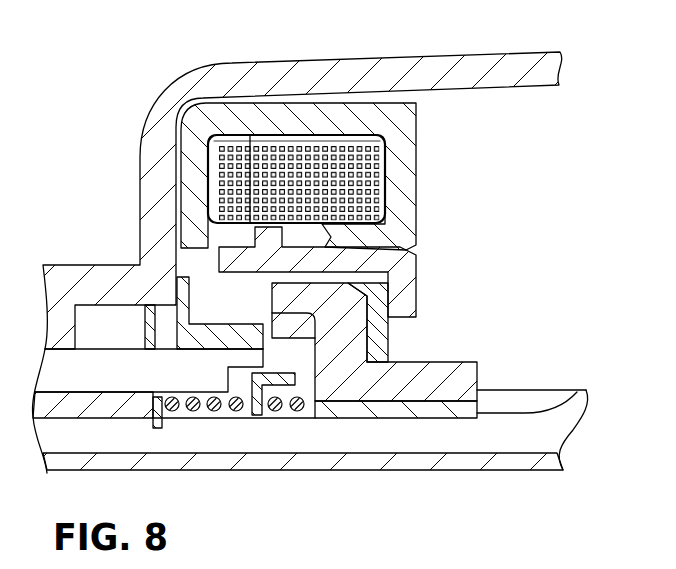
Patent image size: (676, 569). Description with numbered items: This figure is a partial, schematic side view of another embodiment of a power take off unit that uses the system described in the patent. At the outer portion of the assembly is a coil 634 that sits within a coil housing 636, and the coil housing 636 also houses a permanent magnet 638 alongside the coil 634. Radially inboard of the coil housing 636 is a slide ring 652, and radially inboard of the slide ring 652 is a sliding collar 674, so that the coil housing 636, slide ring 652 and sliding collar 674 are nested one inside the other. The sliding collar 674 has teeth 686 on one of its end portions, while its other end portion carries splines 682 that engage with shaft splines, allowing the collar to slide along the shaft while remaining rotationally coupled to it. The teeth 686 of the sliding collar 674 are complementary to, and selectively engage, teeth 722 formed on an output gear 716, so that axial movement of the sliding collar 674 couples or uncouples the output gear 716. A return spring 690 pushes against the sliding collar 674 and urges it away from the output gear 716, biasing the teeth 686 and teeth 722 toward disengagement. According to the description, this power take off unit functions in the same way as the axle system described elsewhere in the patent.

The coil 634 is at (367, 160).
The coil housing 636 is at (407, 207).
The permanent magnet 638 is at (233, 176).
The slide ring 652 is at (407, 278).
The sliding collar 674 is at (455, 373).
The splines 682 is at (455, 405).
The teeth 686 is at (292, 323).
The return spring 690 is at (275, 411).
The output gear 716 is at (202, 383).
The teeth 722 is at (217, 337).